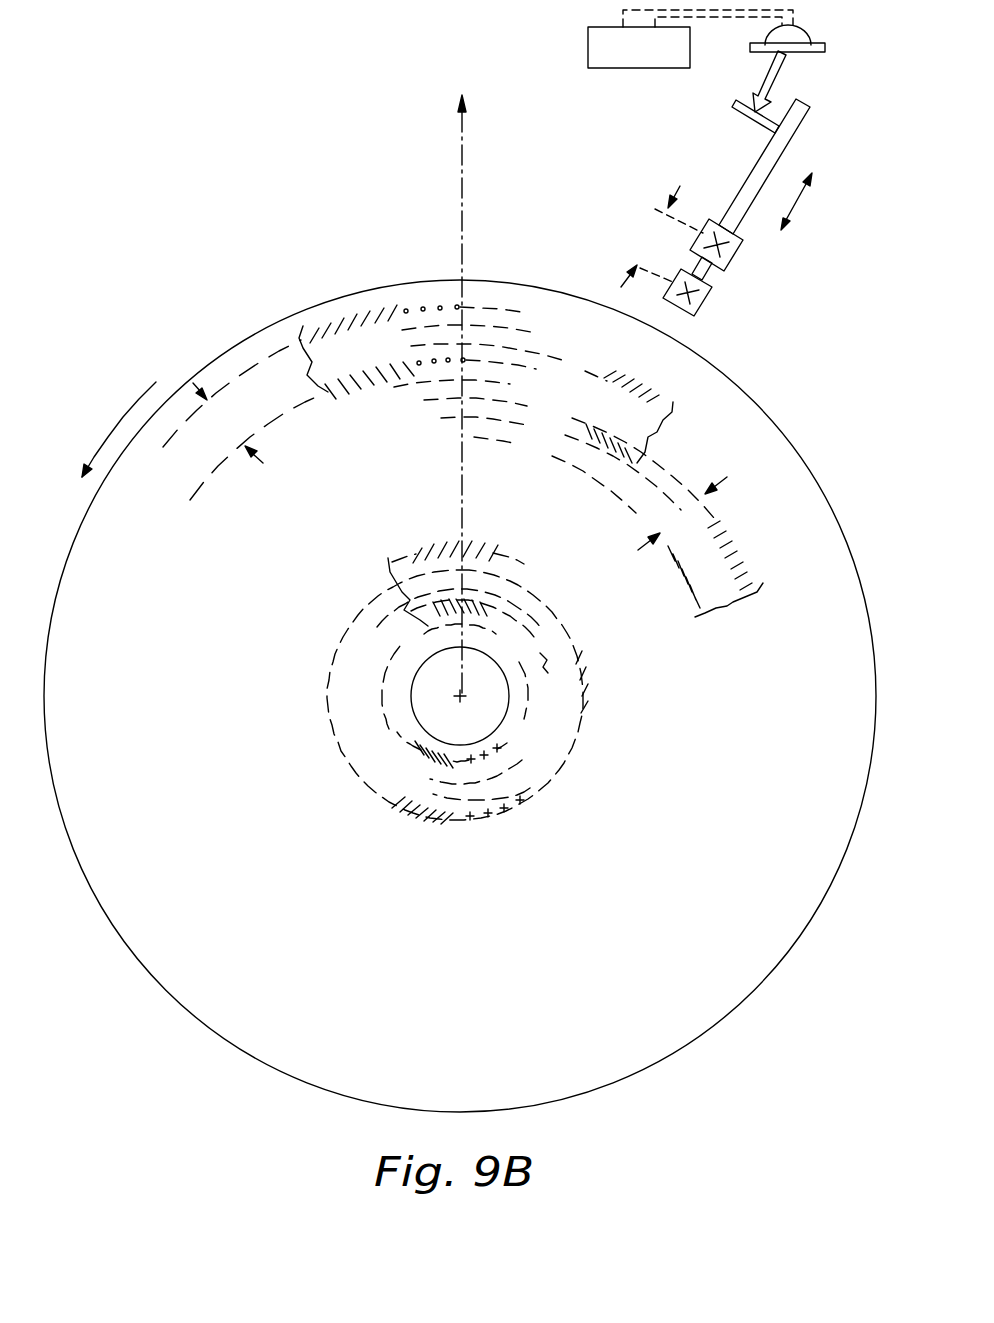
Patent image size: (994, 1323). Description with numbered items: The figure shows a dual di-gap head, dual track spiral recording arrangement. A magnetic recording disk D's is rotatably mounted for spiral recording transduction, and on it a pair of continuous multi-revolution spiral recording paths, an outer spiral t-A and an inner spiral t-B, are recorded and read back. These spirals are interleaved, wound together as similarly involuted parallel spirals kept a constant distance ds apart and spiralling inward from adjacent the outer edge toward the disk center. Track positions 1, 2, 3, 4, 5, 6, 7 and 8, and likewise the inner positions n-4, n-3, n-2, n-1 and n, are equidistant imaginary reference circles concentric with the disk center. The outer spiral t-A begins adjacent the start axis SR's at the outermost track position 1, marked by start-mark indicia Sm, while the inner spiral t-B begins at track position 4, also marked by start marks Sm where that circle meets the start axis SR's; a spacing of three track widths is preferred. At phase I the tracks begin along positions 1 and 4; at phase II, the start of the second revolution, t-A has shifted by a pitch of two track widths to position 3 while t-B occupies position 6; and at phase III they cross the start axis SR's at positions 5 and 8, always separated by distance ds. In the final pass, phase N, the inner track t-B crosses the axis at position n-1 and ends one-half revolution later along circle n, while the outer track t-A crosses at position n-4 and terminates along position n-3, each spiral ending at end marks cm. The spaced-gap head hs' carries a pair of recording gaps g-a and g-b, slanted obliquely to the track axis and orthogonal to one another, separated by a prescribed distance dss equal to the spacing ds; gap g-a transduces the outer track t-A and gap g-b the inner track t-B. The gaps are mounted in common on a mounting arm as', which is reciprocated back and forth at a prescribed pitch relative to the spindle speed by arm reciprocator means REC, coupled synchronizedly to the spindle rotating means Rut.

The track position 1 is at (472, 310).
The track position 2 is at (478, 338).
The track position 3 is at (535, 373).
The track position 4 is at (486, 373).
The track position 5 is at (462, 387).
The track position 6 is at (569, 458).
The track position 7 is at (561, 463).
The track position 8 is at (555, 475).
The start marks Sm is at (410, 318).
The phase I is at (308, 360).
The phase II is at (664, 432).
The phase III is at (715, 583).
The outer spiral track t-A is at (333, 730).
The inner spiral track t-B is at (380, 668).
The spiral spacing ds is at (460, 466).
The magnetic recording disk D's is at (460, 696).
The start axis SR's is at (404, 395).
The phase N is at (435, 583).
The track position n-4 is at (489, 571).
The track position n-3 is at (555, 616).
The track position n-2 is at (560, 630).
The track position n-1 is at (544, 686).
The track position n is at (513, 733).
The end marks cm is at (503, 750).
The spindle rotating means Rut is at (639, 48).
The arm reciprocator means REC is at (813, 38).
The mounting arm as' is at (799, 166).
The spaced-gap dual recording head hs' is at (620, 174).
The gap separation distance dss is at (662, 236).
The first recording gap g-a is at (743, 253).
The second recording gap g-b is at (713, 303).